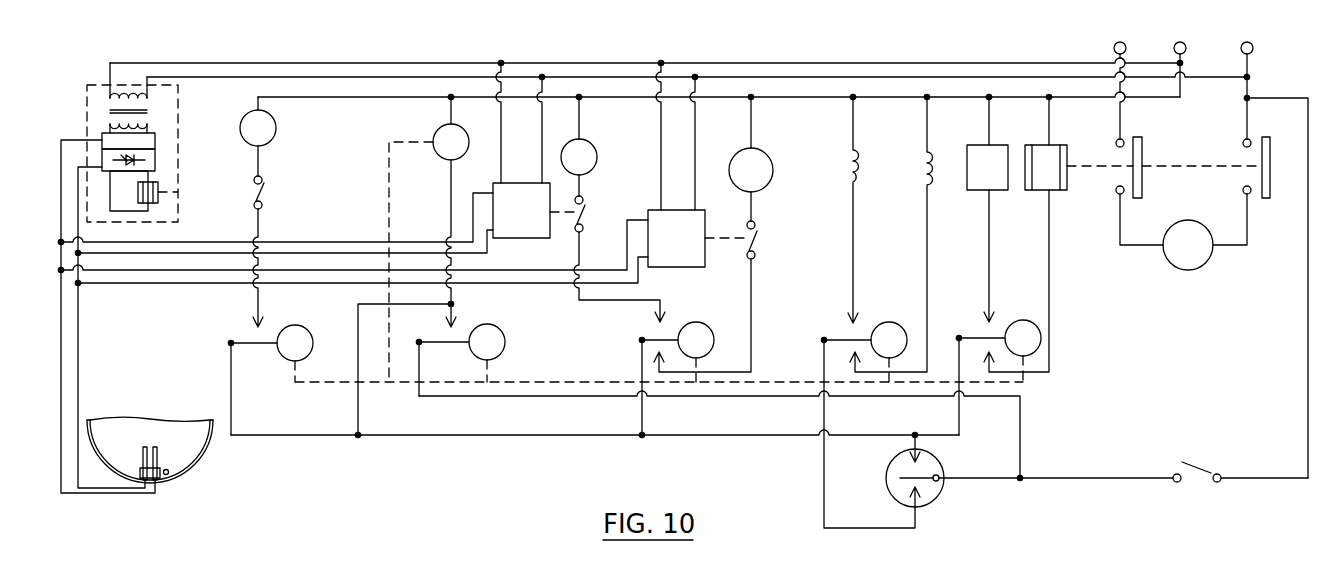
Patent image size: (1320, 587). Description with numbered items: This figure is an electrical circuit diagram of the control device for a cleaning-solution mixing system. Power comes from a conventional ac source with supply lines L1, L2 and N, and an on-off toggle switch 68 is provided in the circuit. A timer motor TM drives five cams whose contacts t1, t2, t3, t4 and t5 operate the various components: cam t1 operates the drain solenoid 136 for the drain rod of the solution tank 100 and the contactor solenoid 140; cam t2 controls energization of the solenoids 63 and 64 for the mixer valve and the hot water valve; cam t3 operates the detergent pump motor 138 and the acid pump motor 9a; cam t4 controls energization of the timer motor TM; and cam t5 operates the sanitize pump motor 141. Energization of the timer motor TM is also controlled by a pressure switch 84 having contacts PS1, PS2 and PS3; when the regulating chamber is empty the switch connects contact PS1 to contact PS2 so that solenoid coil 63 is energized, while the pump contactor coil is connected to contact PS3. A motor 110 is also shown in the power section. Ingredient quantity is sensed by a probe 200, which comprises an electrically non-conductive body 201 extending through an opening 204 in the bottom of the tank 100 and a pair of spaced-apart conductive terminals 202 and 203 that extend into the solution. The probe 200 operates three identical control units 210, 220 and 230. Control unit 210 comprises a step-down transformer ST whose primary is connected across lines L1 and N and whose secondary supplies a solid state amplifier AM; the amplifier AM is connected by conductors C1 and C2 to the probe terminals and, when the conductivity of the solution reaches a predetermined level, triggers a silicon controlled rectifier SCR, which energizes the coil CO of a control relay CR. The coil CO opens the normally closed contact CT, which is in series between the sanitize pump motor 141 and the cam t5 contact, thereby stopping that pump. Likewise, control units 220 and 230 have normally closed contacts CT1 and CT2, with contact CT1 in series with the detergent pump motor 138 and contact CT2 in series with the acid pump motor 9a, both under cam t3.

The control unit 210 is at (180, 113).
The step-down transformer ST is at (152, 101).
The solid state amplifier AM is at (157, 140).
The silicon controlled rectifier SCR is at (157, 165).
The coil CO is at (160, 190).
The control relay CR is at (180, 210).
The sanitize pump motor 141 is at (277, 128).
The contact CT is at (267, 190).
The timer motor TM is at (436, 130).
The control unit 220 is at (523, 240).
The detergent pump motor 138 is at (590, 139).
The contact CT1 is at (585, 210).
The control unit 230 is at (690, 268).
The acid pump motor 9a is at (738, 151).
The contact CT2 is at (760, 240).
The solenoid 64 is at (848, 150).
The solenoid 63 is at (923, 150).
The drain solenoid 136 is at (1003, 146).
The contactor solenoid 140 is at (1062, 147).
The supply line L2 is at (1135, 131).
The supply line N is at (1179, 57).
The supply line L1 is at (1260, 247).
The motor 110 is at (1172, 268).
The timer cam t5 is at (270, 380).
The timer cam t4 is at (460, 360).
The timer cam t3 is at (676, 378).
The timer cam t2 is at (868, 425).
The timer cam t1 is at (998, 377).
The pressure switch 84 is at (886, 479).
The pressure switch contact PS1 is at (925, 472).
The pressure switch contact PS2 is at (918, 496).
The pressure switch contact PS3 is at (893, 453).
The on-off toggle switch 68 is at (1205, 468).
The conductor C1 is at (62, 330).
The conductor C2 is at (79, 354).
The solution tank 100 is at (200, 449).
The probe 200 is at (159, 484).
The electrically non-conductive body 201 is at (140, 475).
The terminal 202 is at (173, 440).
The terminal 203 is at (130, 440).
The opening 204 is at (168, 474).